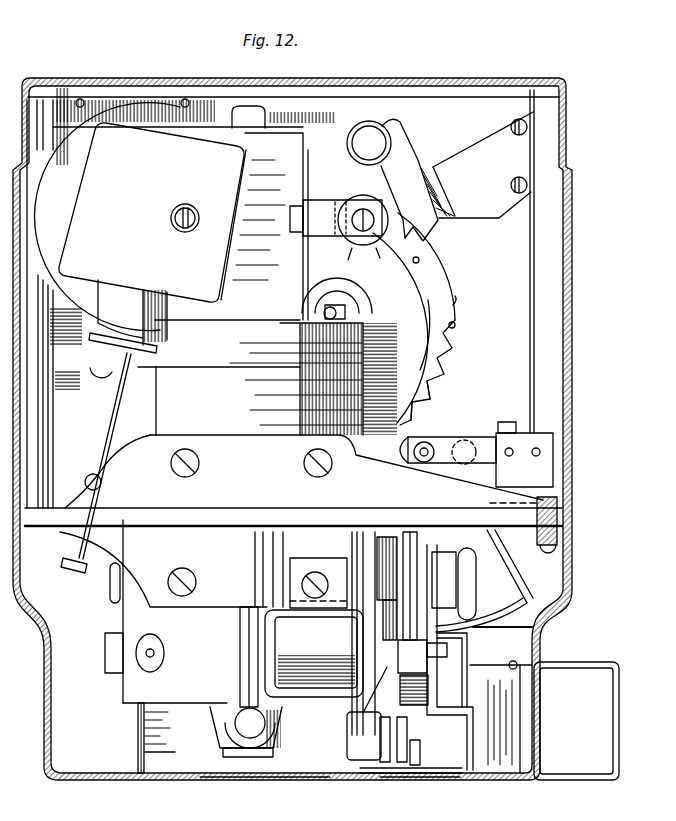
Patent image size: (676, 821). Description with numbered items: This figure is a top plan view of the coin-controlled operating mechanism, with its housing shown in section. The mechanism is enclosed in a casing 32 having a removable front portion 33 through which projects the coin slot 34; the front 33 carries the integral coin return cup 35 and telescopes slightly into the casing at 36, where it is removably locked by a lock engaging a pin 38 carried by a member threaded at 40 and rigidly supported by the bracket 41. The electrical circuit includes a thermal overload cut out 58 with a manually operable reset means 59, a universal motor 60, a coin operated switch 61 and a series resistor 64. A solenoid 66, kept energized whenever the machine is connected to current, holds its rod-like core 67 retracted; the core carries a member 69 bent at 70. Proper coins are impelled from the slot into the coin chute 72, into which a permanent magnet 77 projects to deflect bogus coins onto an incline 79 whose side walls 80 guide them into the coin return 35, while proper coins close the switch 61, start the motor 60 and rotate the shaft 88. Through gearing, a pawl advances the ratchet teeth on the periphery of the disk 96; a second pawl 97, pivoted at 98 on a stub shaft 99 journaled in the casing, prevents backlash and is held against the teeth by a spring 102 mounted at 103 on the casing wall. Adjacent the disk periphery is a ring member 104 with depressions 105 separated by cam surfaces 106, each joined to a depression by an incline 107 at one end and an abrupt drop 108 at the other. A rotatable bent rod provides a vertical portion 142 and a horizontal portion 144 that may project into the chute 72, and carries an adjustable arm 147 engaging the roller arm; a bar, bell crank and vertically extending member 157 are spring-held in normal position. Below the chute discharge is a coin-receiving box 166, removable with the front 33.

The casing 32 is at (574, 330).
The removable front portion 33 is at (281, 783).
The coin slot 34 is at (416, 780).
The coin return cup 35 is at (613, 710).
The telescoping joint 36 is at (571, 536).
The pin 38 is at (247, 662).
The threaded portion 40 is at (247, 630).
The bracket 41 is at (237, 585).
The thermal overload cut out 58 is at (160, 217).
The manually operable reset means 59 is at (108, 413).
The universal motor 60 is at (370, 356).
The coin operated switch 61 is at (432, 445).
The series resistor 64 is at (377, 245).
The solenoid 66 is at (314, 627).
The core member 67 is at (386, 640).
The member 69 is at (422, 656).
The bend 70 is at (377, 709).
The coin shute 72 is at (419, 604).
The permanent magnet 77 is at (429, 690).
The incline 79 is at (479, 757).
The side walls 80 is at (496, 668).
The shaft 88 is at (268, 752).
The disk 96 is at (440, 277).
The second pawl 97 is at (410, 170).
The pivot 98 is at (387, 115).
The stub shaft 99 is at (369, 111).
The spring 102 is at (447, 200).
The spring mounting 103 is at (530, 134).
The ring member 104 is at (440, 346).
The depressions 105 is at (433, 368).
The cam surfaces 106 is at (458, 300).
The incline 107 is at (455, 324).
The abrupt drop 108 is at (426, 393).
The vertical portion 142 is at (514, 578).
The horizontal portion 144 is at (489, 626).
The arm 147 is at (420, 432).
The vertically extending member 157 is at (88, 482).
The coin-receiving box 166 is at (200, 755).